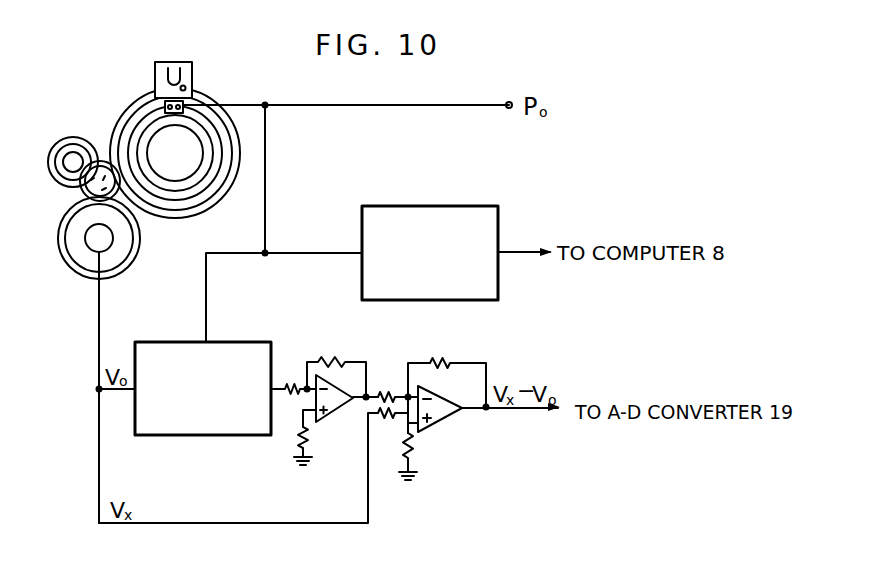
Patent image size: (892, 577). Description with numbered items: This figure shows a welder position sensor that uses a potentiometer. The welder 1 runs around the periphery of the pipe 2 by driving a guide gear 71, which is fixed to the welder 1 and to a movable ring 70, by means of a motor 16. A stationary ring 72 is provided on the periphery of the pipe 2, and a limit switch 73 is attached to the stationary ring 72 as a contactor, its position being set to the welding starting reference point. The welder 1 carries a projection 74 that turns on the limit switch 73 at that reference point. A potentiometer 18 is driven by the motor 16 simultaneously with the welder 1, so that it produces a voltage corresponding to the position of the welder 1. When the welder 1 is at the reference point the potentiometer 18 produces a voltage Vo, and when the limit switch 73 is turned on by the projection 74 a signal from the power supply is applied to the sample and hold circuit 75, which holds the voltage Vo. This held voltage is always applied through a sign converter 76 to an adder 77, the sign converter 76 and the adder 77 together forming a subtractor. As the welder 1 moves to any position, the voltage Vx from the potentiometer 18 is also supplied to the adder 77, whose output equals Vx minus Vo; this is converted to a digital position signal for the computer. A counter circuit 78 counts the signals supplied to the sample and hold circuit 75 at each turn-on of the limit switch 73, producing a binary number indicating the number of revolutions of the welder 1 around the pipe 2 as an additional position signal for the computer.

The welder 1 is at (184, 67).
The pipe 2 is at (199, 178).
The motor 16 is at (78, 137).
The potentiometer 18 is at (92, 240).
The movable ring 70 is at (227, 140).
The guide gear 71 is at (208, 102).
The stationary ring 72 is at (172, 197).
The limit switch 73 is at (164, 107).
The projection 74 is at (165, 70).
The sample and hold circuit 75 is at (245, 342).
The sign converter 76 is at (366, 348).
The adder 77 is at (480, 348).
The counter circuit 78 is at (432, 206).